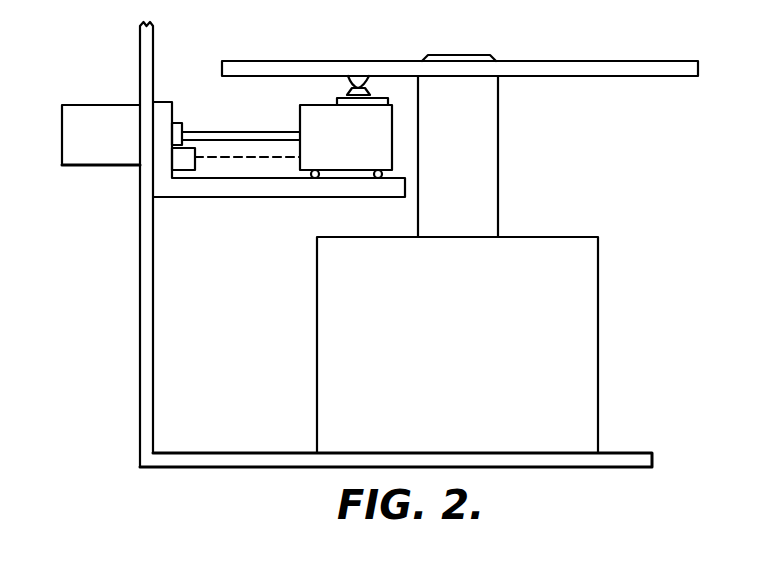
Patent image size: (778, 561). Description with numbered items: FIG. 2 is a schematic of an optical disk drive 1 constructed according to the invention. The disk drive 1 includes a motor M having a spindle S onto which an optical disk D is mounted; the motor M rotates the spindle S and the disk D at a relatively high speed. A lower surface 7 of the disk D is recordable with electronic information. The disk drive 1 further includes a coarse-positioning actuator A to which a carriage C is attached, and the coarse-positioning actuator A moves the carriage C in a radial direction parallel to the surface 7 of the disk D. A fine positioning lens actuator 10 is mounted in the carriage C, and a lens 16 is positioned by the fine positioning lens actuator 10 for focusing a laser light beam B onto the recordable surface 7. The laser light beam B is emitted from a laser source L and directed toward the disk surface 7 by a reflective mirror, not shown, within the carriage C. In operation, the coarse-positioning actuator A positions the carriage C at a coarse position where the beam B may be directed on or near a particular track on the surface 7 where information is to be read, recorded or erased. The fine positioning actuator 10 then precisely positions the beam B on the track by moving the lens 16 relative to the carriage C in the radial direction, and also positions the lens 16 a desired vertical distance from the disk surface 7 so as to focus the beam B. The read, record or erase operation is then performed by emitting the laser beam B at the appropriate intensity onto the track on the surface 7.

The optical disk drive 1 is at (92, 254).
The lower surface 7 is at (595, 77).
The fine positioning lens actuator 10 is at (337, 99).
The lens 16 is at (372, 86).
The coarse-positioning actuator A is at (108, 152).
The laser light beam B is at (348, 75).
The carriage C is at (358, 150).
The optical disk D is at (640, 68).
The laser source L is at (183, 158).
The motor M is at (462, 363).
The spindle S is at (473, 180).